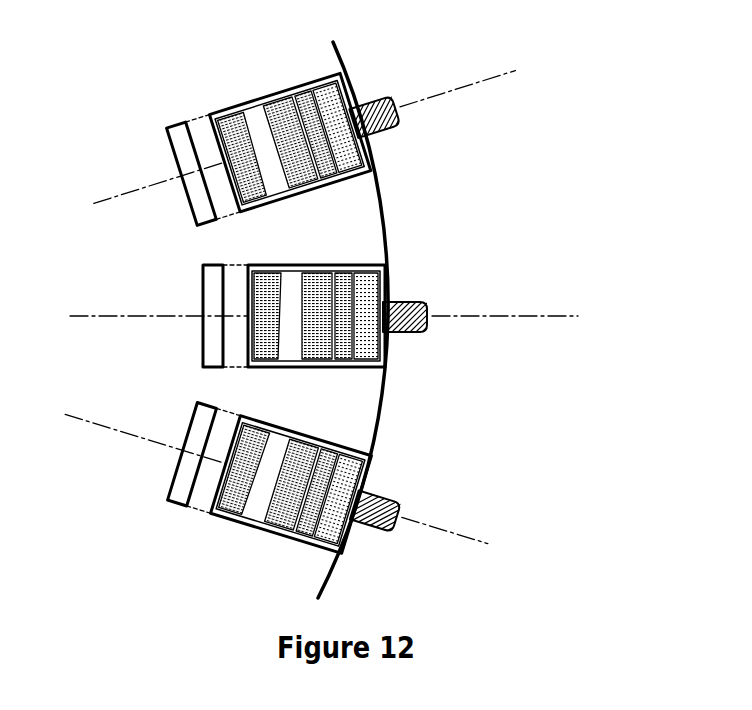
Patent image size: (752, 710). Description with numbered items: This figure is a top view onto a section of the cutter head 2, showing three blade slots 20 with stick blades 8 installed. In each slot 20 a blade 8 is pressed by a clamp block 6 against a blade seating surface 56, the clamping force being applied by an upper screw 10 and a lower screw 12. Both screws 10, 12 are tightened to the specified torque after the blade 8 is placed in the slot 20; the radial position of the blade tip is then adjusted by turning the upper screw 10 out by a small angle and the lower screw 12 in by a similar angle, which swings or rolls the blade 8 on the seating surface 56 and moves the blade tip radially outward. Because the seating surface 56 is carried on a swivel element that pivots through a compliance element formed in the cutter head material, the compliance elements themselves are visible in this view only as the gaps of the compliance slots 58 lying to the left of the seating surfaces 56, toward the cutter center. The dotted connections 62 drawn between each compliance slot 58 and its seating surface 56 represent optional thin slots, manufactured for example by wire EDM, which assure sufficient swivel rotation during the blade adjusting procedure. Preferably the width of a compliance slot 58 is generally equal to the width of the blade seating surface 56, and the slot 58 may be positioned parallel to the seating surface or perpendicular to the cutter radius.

The cutter head 2 is at (340, 228).
The clamp block 6 is at (387, 277).
The stick blade 8 is at (272, 326).
The upper screw 10 is at (492, 343).
The lower screw 12 is at (410, 333).
The blade slot 20 is at (368, 370).
The blade seating surface 56 is at (213, 480).
The compliance slot 58 is at (215, 300).
The dotted connection 62 is at (242, 262).